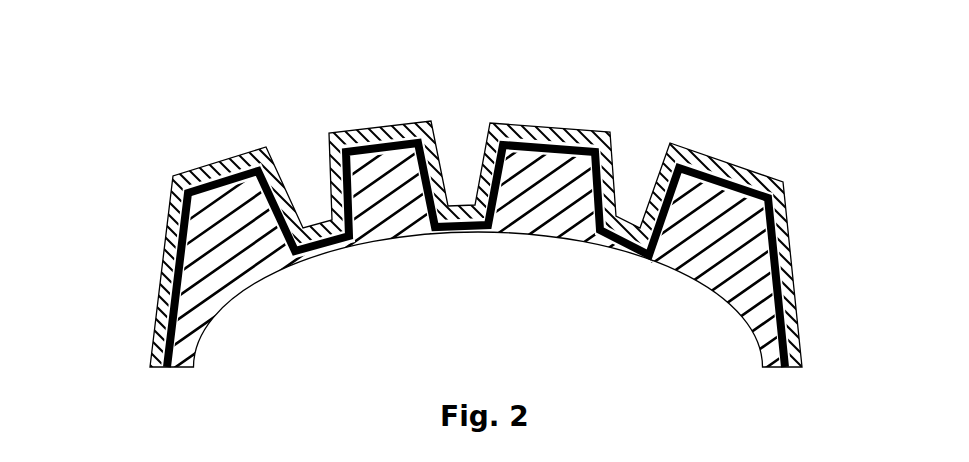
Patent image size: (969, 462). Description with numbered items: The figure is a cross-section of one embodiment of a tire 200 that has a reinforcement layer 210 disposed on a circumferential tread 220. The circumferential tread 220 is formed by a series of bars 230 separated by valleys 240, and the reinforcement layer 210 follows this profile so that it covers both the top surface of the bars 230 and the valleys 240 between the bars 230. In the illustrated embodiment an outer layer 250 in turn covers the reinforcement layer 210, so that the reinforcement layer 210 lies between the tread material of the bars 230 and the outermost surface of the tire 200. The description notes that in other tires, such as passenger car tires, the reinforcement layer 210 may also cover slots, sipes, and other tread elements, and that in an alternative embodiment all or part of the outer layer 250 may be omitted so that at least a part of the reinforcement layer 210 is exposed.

The tire 200 is at (145, 78).
The reinforcement layer 210 is at (795, 250).
The circumferential tread 220 is at (368, 112).
The bars 230 is at (693, 270).
The valleys 240 is at (653, 178).
The outer layer 250 is at (790, 210).